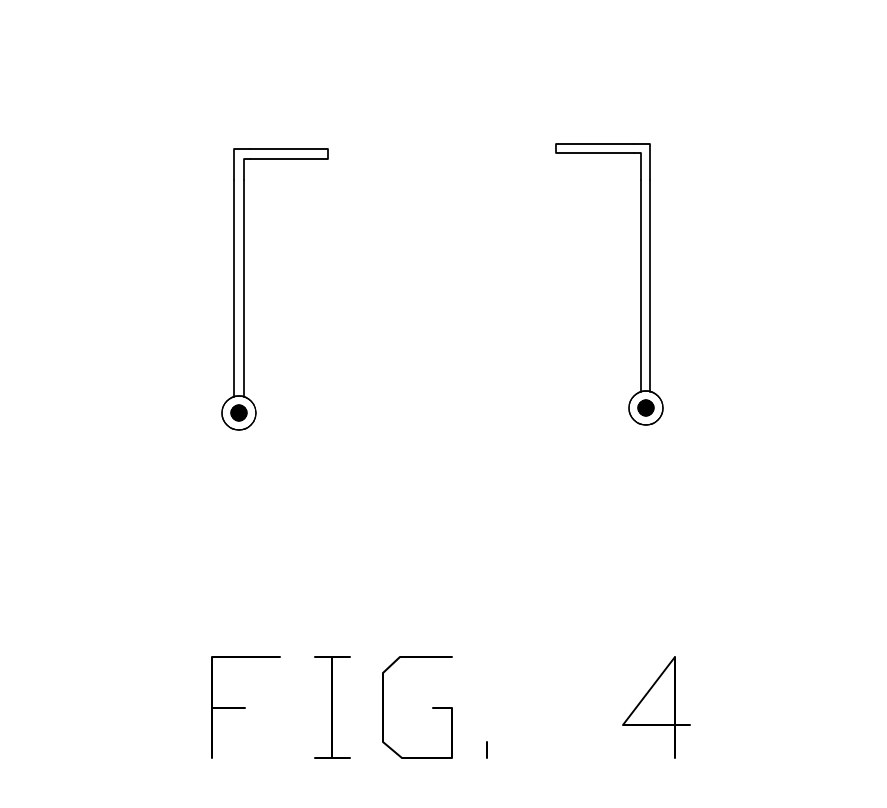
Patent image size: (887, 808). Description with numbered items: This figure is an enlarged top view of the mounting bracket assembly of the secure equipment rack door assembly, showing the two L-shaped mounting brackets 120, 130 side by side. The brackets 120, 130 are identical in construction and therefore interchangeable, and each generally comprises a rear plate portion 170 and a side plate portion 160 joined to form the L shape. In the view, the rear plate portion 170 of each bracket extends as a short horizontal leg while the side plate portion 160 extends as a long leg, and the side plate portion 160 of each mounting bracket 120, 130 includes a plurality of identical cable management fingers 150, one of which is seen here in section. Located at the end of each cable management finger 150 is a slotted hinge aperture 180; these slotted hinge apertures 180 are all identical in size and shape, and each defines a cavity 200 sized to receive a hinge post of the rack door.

The mounting bracket 120 is at (236, 103).
The mounting bracket 130 is at (647, 100).
The cable management finger 150 is at (240, 277).
The side plate portion 160 is at (238, 173).
The rear plate portion 170 is at (304, 150).
The slotted hinge aperture 180 is at (230, 402).
The cavity 200 is at (227, 410).